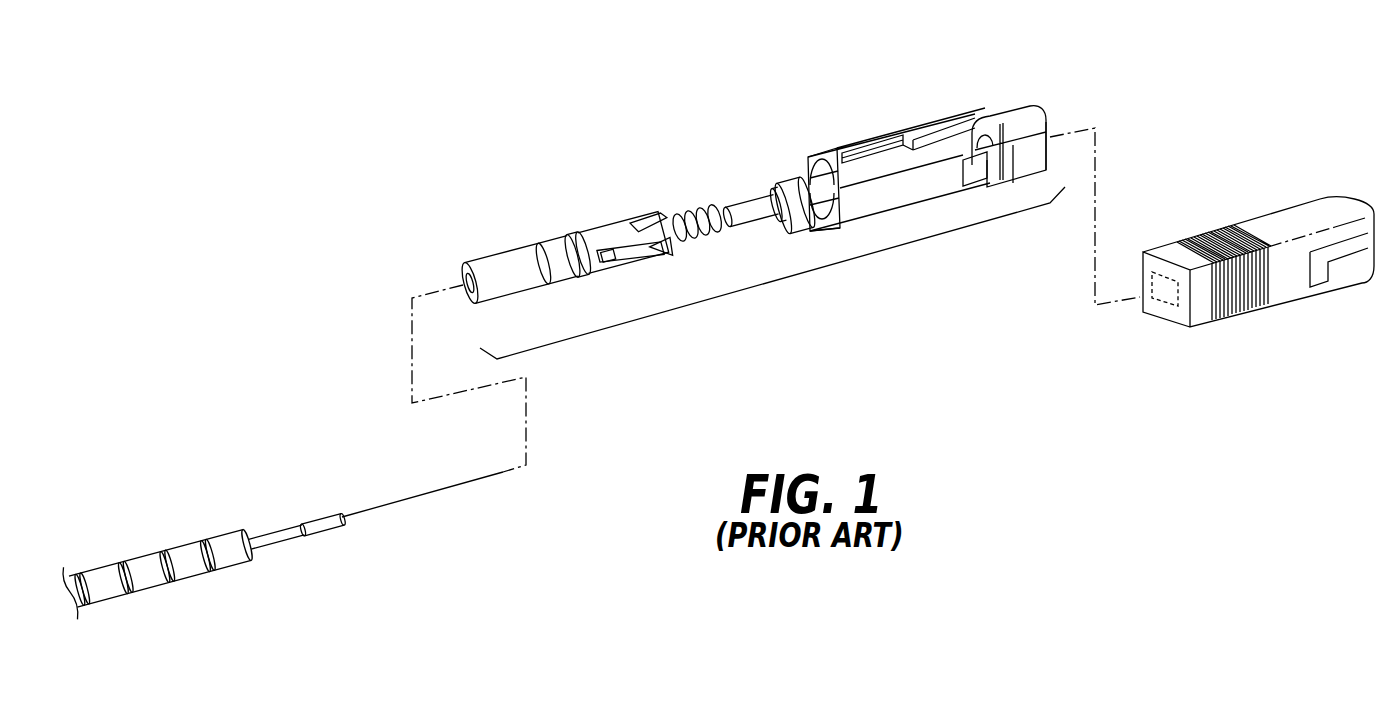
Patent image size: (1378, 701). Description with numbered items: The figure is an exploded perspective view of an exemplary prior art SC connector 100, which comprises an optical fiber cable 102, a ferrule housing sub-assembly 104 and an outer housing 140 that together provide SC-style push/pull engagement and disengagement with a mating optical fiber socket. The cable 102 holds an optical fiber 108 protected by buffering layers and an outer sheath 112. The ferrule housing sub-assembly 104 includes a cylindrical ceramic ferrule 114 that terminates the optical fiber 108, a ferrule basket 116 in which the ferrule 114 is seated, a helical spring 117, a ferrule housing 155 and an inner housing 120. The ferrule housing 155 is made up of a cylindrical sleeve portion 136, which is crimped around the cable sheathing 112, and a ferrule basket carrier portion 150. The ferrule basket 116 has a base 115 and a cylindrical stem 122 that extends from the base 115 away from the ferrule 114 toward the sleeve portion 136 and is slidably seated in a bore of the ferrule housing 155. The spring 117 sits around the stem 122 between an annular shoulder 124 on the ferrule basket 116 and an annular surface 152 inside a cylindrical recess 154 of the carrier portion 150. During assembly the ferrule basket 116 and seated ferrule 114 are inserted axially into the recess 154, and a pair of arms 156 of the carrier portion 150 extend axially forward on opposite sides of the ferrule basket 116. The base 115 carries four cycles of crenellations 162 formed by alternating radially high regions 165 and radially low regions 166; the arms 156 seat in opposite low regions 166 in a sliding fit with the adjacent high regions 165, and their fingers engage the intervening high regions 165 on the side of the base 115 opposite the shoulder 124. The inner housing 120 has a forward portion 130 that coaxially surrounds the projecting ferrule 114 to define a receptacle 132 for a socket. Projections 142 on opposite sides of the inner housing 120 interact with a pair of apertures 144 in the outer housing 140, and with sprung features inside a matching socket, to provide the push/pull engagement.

The SC connector 100 is at (546, 122).
The optical fiber cable 102 is at (187, 543).
The ferrule housing sub-assembly 104 is at (800, 274).
The optical fiber 108 is at (405, 500).
The outer sheath 112 is at (307, 535).
The ferrule 114 is at (825, 190).
The base 115 is at (826, 222).
The ferrule basket 116 is at (775, 183).
The helical spring 117 is at (692, 212).
The inner housing 120 is at (882, 137).
The cylindrical stem 122 is at (743, 217).
The annular shoulder 124 is at (777, 218).
The forward portion 130 is at (1017, 110).
The receptacle 132 is at (1047, 122).
The cylindrical sleeve portion 136 is at (507, 287).
The outer housing 140 is at (1282, 217).
The projections 142 is at (973, 177).
The apertures 144 is at (1327, 263).
The ferrule basket carrier portion 150 is at (597, 225).
The annular surface 152 is at (618, 255).
The cylindrical recess 154 is at (647, 237).
The ferrule housing 155 is at (522, 233).
The arms 156 is at (640, 207).
The crenellations 162 is at (800, 168).
The radially high regions 165 is at (800, 180).
The radially low regions 166 is at (837, 198).